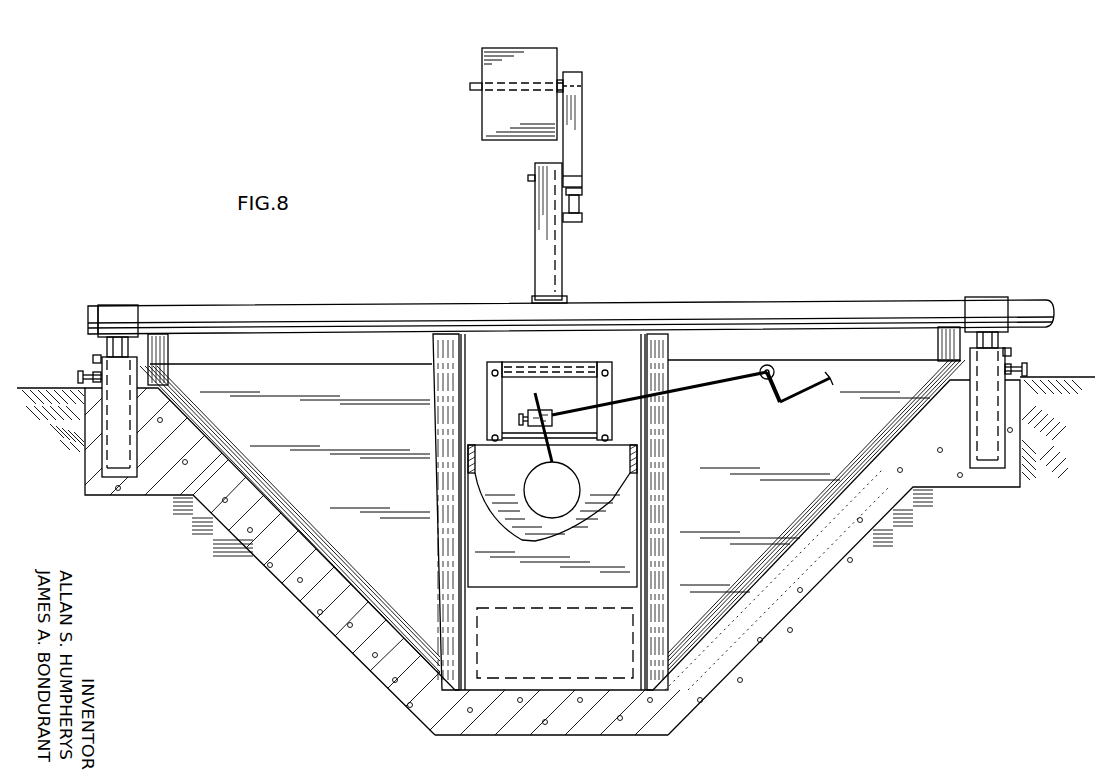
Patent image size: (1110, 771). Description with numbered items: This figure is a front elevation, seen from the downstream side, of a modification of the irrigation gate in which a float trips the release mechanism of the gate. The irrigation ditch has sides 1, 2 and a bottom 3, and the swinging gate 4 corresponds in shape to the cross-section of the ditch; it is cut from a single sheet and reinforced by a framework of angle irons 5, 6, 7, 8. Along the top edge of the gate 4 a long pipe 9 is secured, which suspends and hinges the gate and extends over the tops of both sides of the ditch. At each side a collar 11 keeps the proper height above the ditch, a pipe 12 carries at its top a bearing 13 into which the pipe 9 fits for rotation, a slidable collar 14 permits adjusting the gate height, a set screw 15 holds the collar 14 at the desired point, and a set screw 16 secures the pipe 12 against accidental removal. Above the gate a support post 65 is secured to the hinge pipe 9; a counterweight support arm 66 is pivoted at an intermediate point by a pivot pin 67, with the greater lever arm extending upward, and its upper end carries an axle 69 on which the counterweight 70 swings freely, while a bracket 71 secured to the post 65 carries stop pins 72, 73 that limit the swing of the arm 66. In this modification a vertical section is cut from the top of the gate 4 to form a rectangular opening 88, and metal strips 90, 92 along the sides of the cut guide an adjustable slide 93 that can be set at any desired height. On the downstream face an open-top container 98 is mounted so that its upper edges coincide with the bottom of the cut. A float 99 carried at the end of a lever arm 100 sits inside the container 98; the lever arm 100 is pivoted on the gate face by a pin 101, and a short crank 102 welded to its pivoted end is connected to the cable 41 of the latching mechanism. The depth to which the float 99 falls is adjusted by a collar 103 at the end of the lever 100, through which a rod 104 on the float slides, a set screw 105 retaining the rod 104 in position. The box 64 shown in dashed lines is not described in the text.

The ditch side 1 is at (297, 594).
The ditch side 2 is at (773, 623).
The ditch bottom 3 is at (531, 737).
The swinging gate 4 is at (368, 500).
The angle iron 5 is at (740, 577).
The angle iron 6 is at (668, 470).
The angle iron 7 is at (432, 437).
The angle iron 8 is at (327, 550).
The hinge pipe 9 is at (841, 301).
The collar 11 is at (1061, 405).
The inner pipe 12 is at (107, 338).
The bearing 13 is at (119, 305).
The slidable collar 14 is at (105, 351).
The set screw 15 is at (93, 359).
The set screw 16 is at (78, 376).
The cable 41 is at (801, 402).
The counterweight box 64 is at (542, 679).
The support post 65 is at (535, 257).
The counterweight support arm 66 is at (583, 160).
The pivot pin 67 is at (528, 178).
The axle 69 is at (470, 90).
The counterweight 70 is at (540, 48).
The bracket 71 is at (580, 210).
The stop pin 72 is at (583, 192).
The stop pin 73 is at (583, 220).
The rectangular opening 88 is at (517, 362).
The metal strip 90 is at (488, 380).
The metal strip 92 is at (612, 369).
The adjustable slide 93 is at (543, 362).
The open-top container 98 is at (637, 491).
The float 99 is at (524, 483).
The lever arm 100 is at (691, 389).
The pivot pin 101 is at (761, 382).
The crank 102 is at (775, 407).
The collar 103 is at (552, 412).
The rod 104 is at (555, 452).
The set screw 105 is at (526, 411).